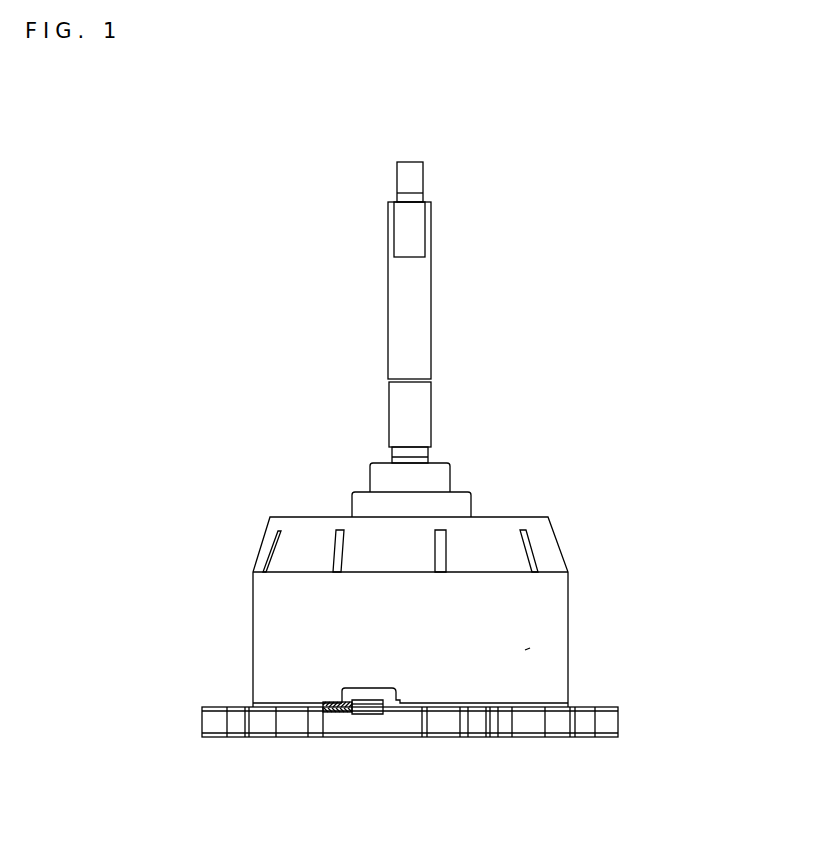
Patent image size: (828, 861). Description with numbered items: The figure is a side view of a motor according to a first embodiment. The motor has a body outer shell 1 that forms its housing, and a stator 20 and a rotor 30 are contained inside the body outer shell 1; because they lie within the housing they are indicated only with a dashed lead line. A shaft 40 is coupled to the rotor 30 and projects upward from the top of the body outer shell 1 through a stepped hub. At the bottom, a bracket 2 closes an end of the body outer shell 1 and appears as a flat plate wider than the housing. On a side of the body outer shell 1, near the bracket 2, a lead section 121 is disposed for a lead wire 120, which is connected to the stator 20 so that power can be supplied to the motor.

The body outer shell 1 is at (568, 609).
The bracket 2 is at (508, 735).
The stator 20 is at (523, 651).
The rotor 30 is at (527, 649).
The shaft 40 is at (431, 316).
The lead wire 120 is at (325, 714).
The lead section 121 is at (365, 714).